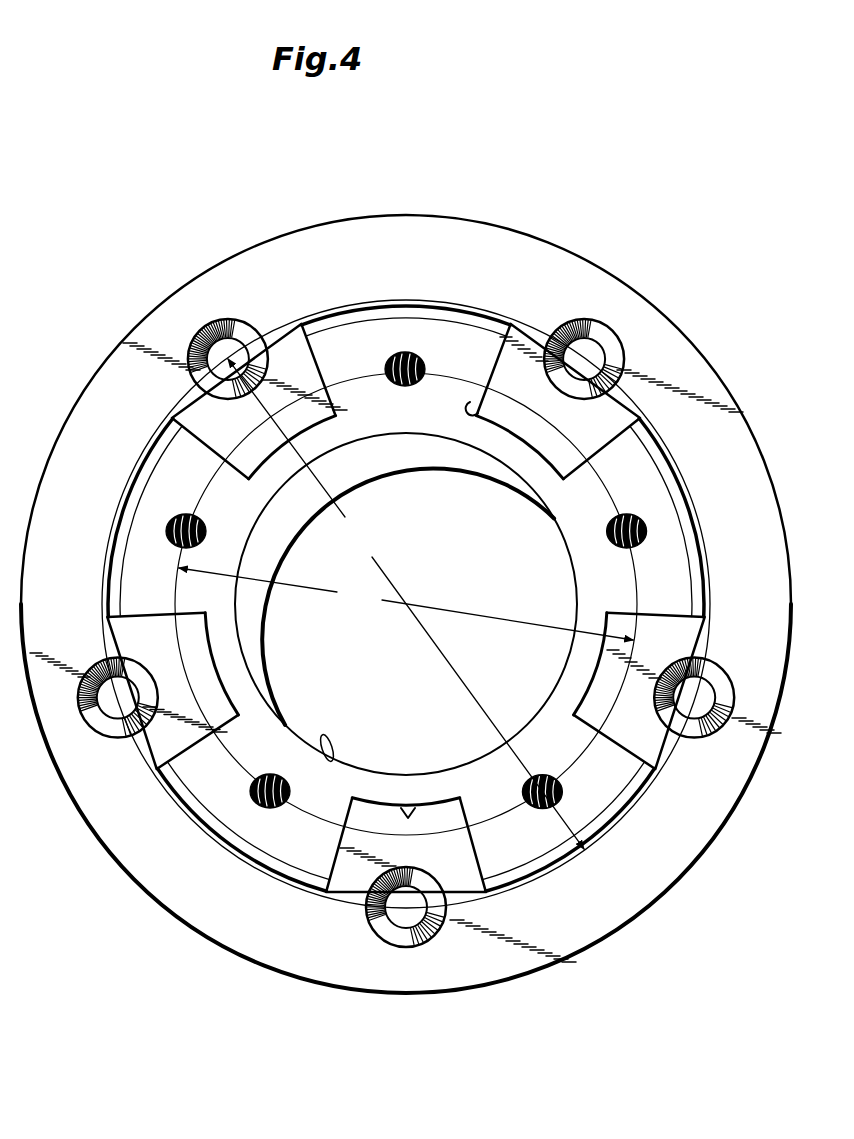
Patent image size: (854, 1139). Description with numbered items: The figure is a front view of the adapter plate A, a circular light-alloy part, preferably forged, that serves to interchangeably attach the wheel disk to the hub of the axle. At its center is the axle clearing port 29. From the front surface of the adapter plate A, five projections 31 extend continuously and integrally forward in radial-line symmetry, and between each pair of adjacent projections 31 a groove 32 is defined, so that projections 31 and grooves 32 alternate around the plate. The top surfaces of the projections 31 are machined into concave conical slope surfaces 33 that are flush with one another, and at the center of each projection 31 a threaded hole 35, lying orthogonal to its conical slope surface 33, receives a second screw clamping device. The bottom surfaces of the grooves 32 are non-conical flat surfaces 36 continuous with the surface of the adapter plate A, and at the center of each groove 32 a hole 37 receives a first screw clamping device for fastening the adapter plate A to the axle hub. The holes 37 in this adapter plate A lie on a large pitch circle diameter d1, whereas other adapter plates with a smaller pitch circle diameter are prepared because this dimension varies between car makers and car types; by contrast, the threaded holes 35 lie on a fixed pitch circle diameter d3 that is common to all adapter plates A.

The adapter plate A is at (491, 212).
The axle clearing port 29 is at (328, 762).
The projections 31 is at (377, 298).
The grooves 32 is at (478, 412).
The concave conical slope surfaces 33 is at (473, 338).
The threaded holes 35 is at (200, 514).
The non-conical flat surfaces 36 is at (212, 690).
The holes 37 is at (590, 345).
The large PCD d1 is at (406, 604).
The fixed PCD d3 is at (406, 604).